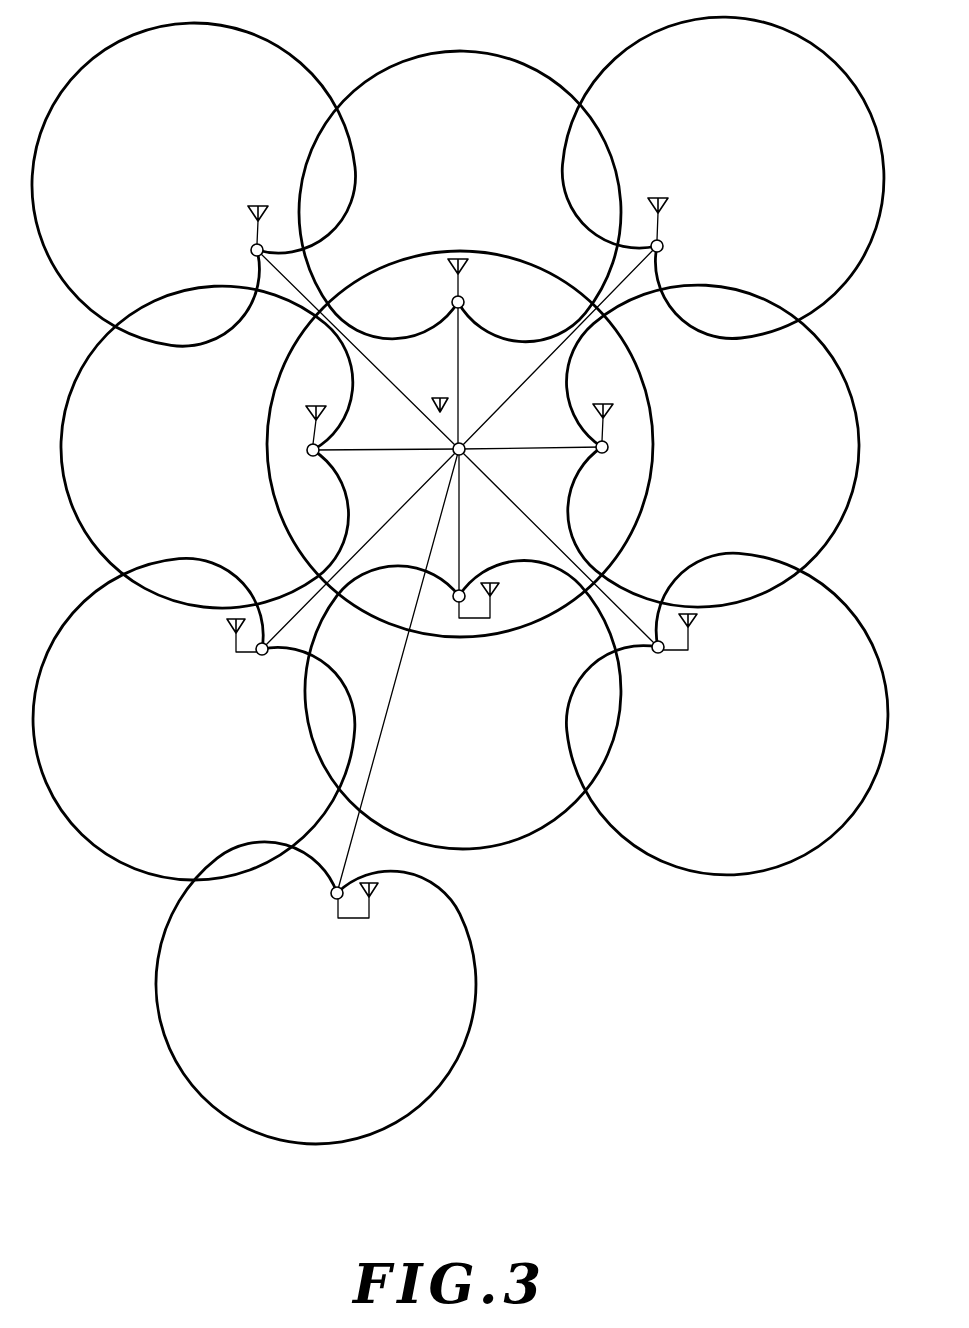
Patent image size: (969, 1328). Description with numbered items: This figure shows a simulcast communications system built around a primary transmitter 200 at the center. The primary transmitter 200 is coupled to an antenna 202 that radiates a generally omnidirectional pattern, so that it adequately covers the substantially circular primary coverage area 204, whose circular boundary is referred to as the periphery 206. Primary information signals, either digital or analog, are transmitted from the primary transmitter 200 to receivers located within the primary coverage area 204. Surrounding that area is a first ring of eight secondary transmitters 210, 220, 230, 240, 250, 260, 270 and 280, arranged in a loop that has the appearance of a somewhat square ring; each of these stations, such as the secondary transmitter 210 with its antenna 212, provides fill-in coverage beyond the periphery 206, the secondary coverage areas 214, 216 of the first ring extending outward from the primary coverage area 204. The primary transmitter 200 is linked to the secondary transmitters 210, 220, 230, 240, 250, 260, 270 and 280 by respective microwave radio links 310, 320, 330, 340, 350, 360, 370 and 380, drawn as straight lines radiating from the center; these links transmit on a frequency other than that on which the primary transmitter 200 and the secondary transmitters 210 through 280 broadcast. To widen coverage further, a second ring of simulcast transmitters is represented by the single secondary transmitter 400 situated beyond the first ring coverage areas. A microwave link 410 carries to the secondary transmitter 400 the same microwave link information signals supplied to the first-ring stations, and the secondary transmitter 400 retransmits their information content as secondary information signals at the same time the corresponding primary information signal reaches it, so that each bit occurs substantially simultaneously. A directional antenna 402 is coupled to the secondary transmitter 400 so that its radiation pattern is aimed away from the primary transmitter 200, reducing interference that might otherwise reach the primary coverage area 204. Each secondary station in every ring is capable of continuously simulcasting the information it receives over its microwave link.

The primary transmitter 200 is at (452, 453).
The antenna 202 is at (438, 396).
The primary coverage area 204 is at (545, 598).
The periphery 206 is at (448, 637).
The secondary transmitter 210 is at (251, 252).
The antenna 212 is at (250, 212).
The cell 214 is at (247, 37).
The cell 216 is at (105, 51).
The secondary transmitter 220 is at (464, 298).
The secondary transmitter 230 is at (664, 246).
The secondary transmitter 240 is at (605, 455).
The secondary transmitter 250 is at (663, 655).
The secondary transmitter 260 is at (462, 588).
The secondary transmitter 270 is at (254, 659).
The secondary transmitter 280 is at (314, 458).
The microwave radio link 310 is at (378, 368).
The microwave radio link 320 is at (456, 330).
The microwave radio link 330 is at (537, 368).
The microwave radio link 340 is at (490, 448).
The microwave radio link 350 is at (490, 478).
The microwave radio link 360 is at (462, 491).
The microwave radio link 370 is at (387, 525).
The microwave radio link 380 is at (347, 448).
The secondary transmitter 400 is at (331, 893).
The directional antenna 402 is at (377, 889).
The microwave link 410 is at (405, 643).